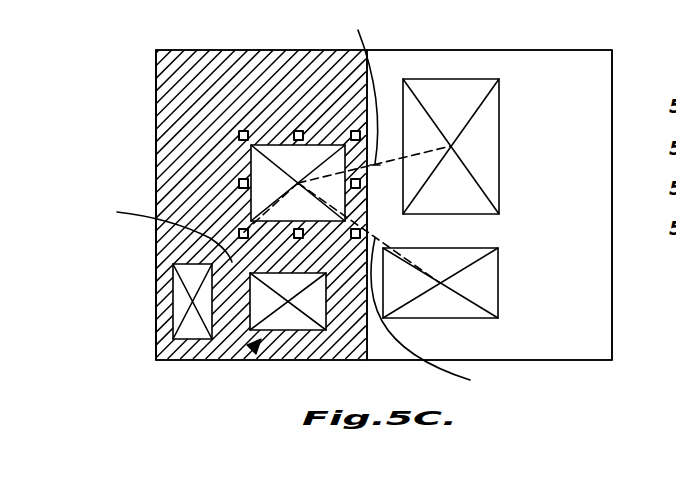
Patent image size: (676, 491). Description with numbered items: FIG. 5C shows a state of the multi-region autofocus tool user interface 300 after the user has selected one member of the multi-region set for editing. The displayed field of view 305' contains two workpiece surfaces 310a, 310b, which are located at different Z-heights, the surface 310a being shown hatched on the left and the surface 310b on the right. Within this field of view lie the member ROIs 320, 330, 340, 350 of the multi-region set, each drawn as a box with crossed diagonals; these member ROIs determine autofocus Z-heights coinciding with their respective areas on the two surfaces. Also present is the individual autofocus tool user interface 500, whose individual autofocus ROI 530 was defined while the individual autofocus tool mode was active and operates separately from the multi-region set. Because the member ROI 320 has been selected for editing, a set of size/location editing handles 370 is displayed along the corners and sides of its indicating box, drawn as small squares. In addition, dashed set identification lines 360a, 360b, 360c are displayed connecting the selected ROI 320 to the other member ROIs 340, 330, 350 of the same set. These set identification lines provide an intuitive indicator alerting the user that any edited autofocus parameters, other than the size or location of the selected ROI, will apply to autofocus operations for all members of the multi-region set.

The multi-region autofocus tool user interface 300 is at (552, 68).
The field of view 305' is at (111, 205).
The workpiece surface 310a is at (183, 125).
The workpiece surface 310b is at (555, 340).
The member ROI 320 is at (250, 176).
The member ROI 330 is at (498, 283).
The member ROI 340 is at (432, 90).
The member ROI 350 is at (183, 302).
The set identification line 360a is at (341, 89).
The set identification line 360b is at (446, 314).
The set identification line 360c is at (147, 228).
The size/location editing handles 370 is at (243, 131).
The individual autofocus tool user interface 500 is at (252, 348).
The individual autofocus ROI 530 is at (288, 321).